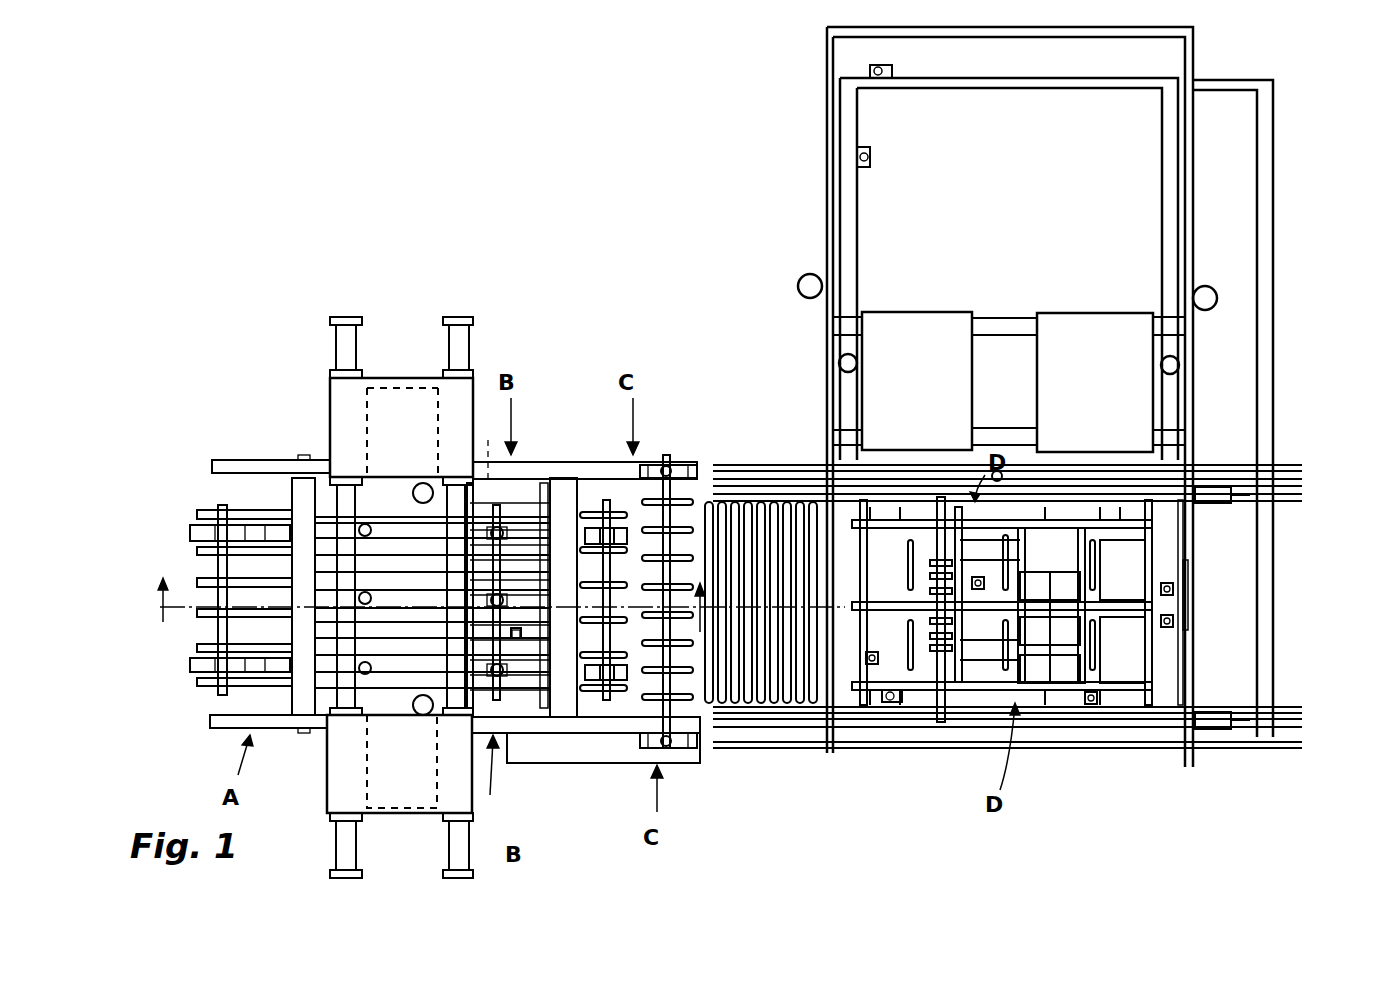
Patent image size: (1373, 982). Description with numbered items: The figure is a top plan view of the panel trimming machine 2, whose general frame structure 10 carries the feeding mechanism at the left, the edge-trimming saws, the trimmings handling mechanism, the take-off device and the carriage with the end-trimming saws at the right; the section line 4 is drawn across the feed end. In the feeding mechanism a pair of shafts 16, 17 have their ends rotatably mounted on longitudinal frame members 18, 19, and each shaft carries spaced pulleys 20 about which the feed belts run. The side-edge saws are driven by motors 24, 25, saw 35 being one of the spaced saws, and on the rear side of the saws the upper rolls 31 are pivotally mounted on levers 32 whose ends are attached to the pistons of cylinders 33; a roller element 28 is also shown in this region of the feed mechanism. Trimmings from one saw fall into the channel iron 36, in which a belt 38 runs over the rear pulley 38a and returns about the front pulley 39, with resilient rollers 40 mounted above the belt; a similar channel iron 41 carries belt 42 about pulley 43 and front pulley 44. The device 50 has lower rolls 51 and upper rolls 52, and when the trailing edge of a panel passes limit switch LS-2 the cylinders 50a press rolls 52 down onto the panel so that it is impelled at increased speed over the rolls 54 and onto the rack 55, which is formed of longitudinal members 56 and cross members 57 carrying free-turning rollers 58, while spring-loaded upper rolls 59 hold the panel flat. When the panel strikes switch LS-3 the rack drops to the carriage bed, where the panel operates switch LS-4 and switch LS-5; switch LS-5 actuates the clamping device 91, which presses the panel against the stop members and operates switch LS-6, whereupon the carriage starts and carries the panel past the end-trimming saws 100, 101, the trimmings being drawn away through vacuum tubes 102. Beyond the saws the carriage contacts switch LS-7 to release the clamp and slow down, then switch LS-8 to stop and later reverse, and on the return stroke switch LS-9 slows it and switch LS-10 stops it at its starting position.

The apparatus 2 is at (198, 318).
The section line 4 is at (501, 615).
The general frame structure 10 is at (822, 413).
The shaft 16 is at (218, 510).
The shaft 17 is at (598, 510).
The longitudinal frame member 18 is at (214, 730).
The longitudinal frame member 19 is at (214, 458).
The pulleys 20 is at (200, 578).
The motor 24 is at (400, 796).
The motor 25 is at (403, 390).
The roller 28 is at (362, 528).
The rolls 31 is at (395, 718).
The levers 32 is at (490, 530).
The cylinders 33 is at (505, 530).
The saw 35 is at (408, 485).
The channel iron 36 is at (478, 735).
The belt 38 is at (1130, 725).
The pulley 38a is at (1200, 712).
The front pulley 39 is at (485, 712).
The resilient rollers 40 is at (1208, 487).
The channel iron 41 is at (522, 475).
The belt 42 is at (1112, 500).
The pulley 43 is at (1226, 504).
The front pulley 44 is at (482, 446).
The device 50 is at (688, 500).
The cylinders 50a is at (660, 468).
The rolls 51 is at (690, 720).
The rolls 52 is at (640, 725).
The rolls 54 is at (742, 500).
The rack 55 is at (1110, 680).
The members 56 is at (1118, 600).
The cross members 57 is at (1062, 475).
The roller 58 is at (1082, 500).
The upper rolls 59 is at (928, 580).
The clamping device 91 is at (1000, 492).
The saw 100 is at (830, 400).
The saw 101 is at (1180, 408).
The vacuum tubes 102 is at (840, 362).
The limit switch LS-2 is at (516, 640).
The switch LS-3 is at (1178, 627).
The switch LS-4 is at (978, 592).
The switch LS-5 is at (1178, 588).
The switch LS-6 is at (1091, 706).
The switch LS-7 is at (872, 157).
The switch LS-8 is at (893, 66).
The switch LS-9 is at (872, 668).
The switch LS-10 is at (892, 705).